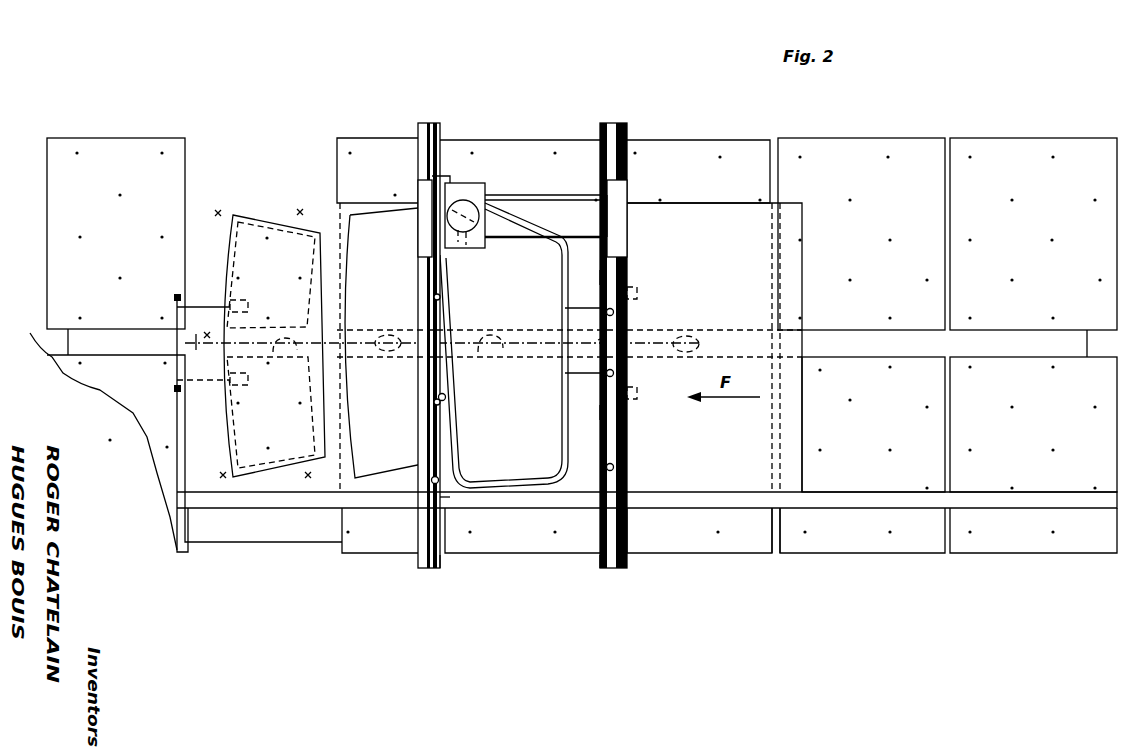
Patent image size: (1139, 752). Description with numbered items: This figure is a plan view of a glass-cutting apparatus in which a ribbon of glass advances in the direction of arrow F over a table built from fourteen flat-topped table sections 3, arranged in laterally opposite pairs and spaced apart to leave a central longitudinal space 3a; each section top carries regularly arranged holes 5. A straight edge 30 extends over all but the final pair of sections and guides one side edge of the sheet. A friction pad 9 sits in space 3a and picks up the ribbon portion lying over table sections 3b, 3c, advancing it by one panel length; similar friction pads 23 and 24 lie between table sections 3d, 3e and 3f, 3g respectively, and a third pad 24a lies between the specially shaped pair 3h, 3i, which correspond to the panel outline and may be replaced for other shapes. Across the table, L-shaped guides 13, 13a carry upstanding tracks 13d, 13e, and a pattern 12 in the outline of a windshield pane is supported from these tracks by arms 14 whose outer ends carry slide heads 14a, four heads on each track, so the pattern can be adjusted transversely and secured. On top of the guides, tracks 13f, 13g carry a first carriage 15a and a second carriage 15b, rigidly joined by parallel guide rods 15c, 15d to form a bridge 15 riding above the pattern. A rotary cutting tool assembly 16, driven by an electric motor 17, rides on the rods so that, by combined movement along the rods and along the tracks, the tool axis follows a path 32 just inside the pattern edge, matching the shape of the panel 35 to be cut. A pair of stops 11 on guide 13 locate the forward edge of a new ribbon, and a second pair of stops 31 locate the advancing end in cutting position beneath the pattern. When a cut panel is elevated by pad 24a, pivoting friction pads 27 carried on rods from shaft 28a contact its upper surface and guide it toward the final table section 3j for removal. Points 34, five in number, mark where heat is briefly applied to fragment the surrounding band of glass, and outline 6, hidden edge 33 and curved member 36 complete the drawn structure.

The table section 3 is at (959, 140).
The central longitudinal space 3a is at (847, 352).
The table section 3b is at (687, 545).
The table section 3c is at (702, 150).
The table section 3d is at (541, 146).
The table section 3e is at (512, 551).
The table section 3f is at (371, 146).
The table section 3g is at (368, 556).
The shaped table section 3h is at (240, 257).
The shaped table section 3i is at (282, 462).
The final table section 3j is at (120, 148).
The holes 5 is at (925, 200).
The movable panel outline 6 is at (805, 438).
The friction pad 9 is at (690, 335).
The stops 11 is at (638, 293).
The pattern 12 is at (556, 226).
The guide 13 is at (603, 276).
The guide 13a is at (443, 497).
The track 13d is at (606, 411).
The track 13e is at (443, 553).
The track 13f is at (622, 131).
The track 13g is at (429, 124).
The arms 14 is at (574, 216).
The slide head 14a is at (600, 340).
The bridge 15 is at (506, 192).
The first carriage 15a is at (628, 218).
The second carriage 15b is at (417, 244).
The guide rod 15c is at (526, 194).
The guide rod 15d is at (525, 240).
The cutting tool assembly 16 is at (478, 245).
The electric motor 17 is at (470, 202).
The friction pad 23 is at (490, 354).
The friction pad 24 is at (388, 352).
The third friction pad 24a is at (287, 355).
The friction pads 27 is at (248, 305).
The shaft 28a is at (178, 342).
The straight edge 30 is at (882, 506).
The stops 31 is at (443, 298).
The path 32 is at (548, 292).
The panel edge 33 is at (331, 215).
The heating points 34 is at (300, 211).
The panel 35 is at (240, 441).
The curved panel 36 is at (388, 462).